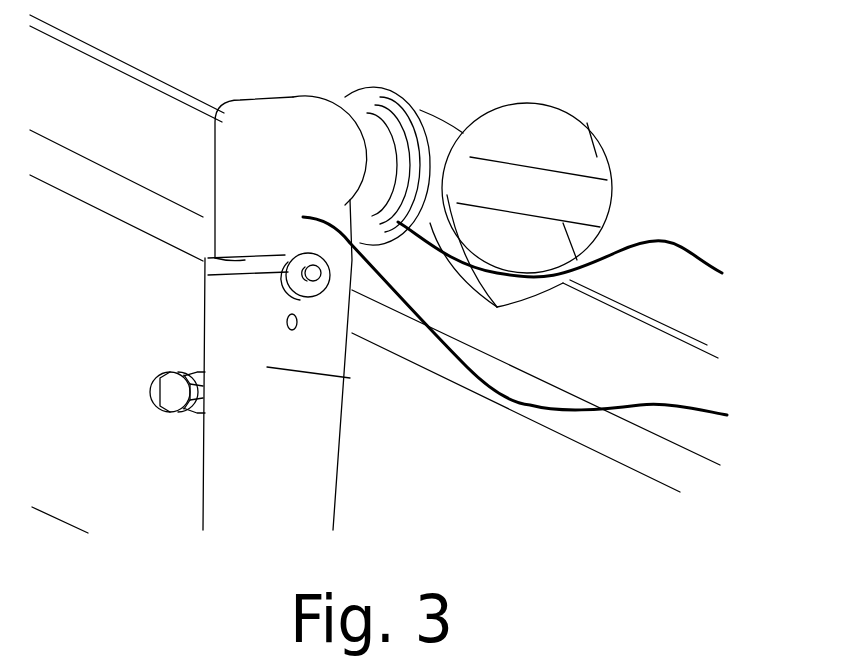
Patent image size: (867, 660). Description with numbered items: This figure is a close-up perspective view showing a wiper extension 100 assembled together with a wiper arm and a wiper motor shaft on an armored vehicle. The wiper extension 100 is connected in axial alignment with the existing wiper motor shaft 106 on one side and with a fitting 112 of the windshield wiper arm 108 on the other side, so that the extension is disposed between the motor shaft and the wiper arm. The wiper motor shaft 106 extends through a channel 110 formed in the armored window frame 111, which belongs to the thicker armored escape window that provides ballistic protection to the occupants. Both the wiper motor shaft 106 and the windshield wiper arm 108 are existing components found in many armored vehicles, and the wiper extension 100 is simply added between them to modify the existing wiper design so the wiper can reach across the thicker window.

The wiper extension 100 is at (597, 259).
The wiper motor shaft 106 is at (560, 190).
The windshield wiper arm 108 is at (544, 326).
The channel 110 is at (567, 107).
The armored window frame 111 is at (660, 360).
The fitting 112 is at (328, 117).